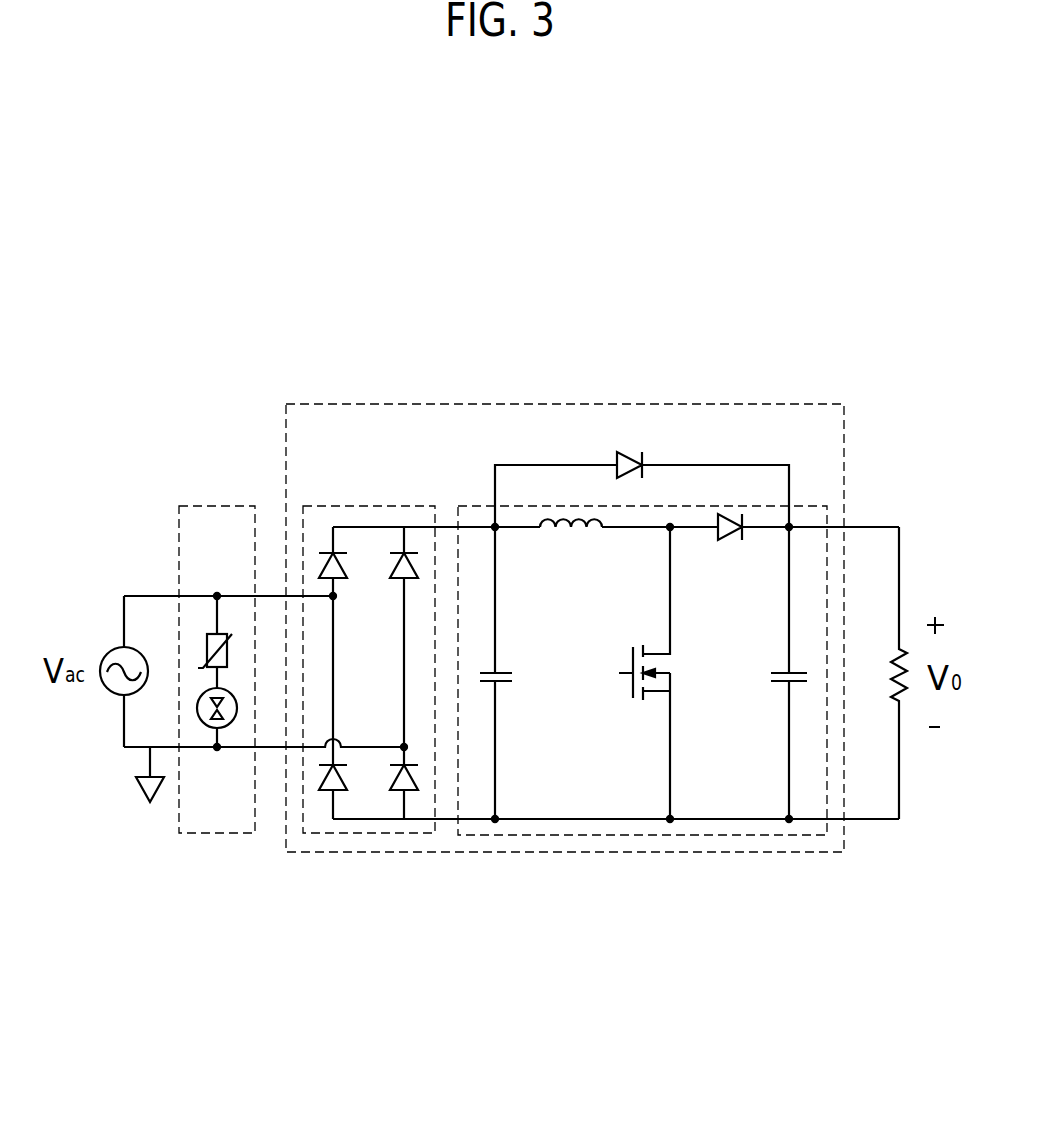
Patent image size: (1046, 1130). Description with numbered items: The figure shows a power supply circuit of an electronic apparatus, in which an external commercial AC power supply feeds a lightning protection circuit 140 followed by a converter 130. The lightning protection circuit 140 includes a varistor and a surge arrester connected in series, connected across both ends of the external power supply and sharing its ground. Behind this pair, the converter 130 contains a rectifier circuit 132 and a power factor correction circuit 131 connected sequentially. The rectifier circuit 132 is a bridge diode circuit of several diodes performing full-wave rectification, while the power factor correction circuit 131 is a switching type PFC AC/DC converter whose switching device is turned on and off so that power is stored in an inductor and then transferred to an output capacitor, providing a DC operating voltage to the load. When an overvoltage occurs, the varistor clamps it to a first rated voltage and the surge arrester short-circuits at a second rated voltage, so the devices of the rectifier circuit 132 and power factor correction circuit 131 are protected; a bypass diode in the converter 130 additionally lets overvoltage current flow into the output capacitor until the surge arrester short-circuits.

The converter 130 is at (443, 403).
The power factor correction circuit 131 is at (635, 835).
The rectifier circuit 132 is at (370, 835).
The lightning protection circuit 140 is at (219, 835).